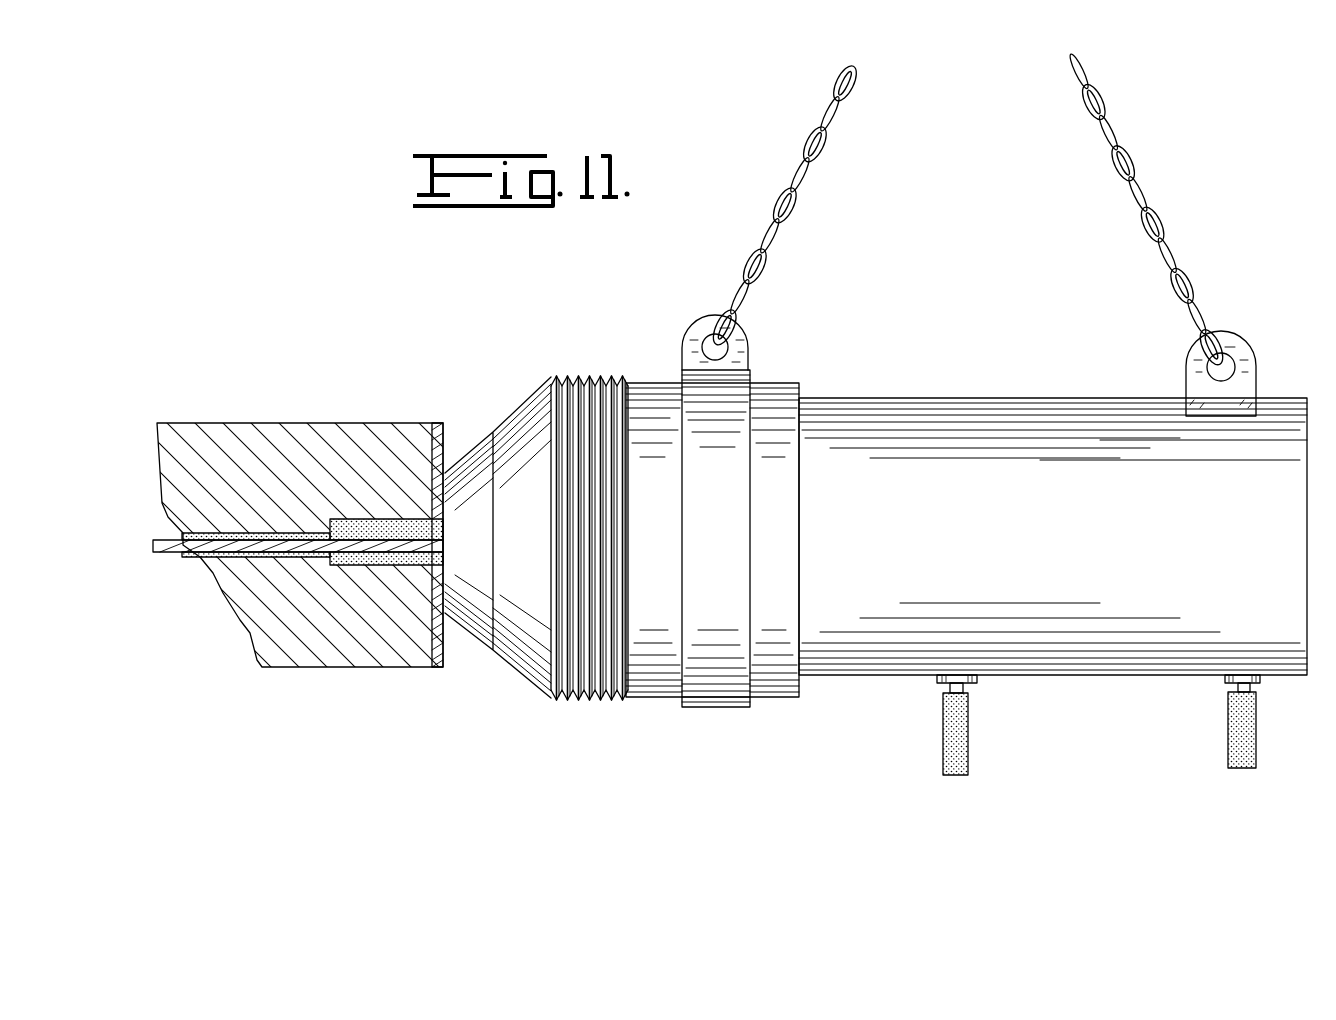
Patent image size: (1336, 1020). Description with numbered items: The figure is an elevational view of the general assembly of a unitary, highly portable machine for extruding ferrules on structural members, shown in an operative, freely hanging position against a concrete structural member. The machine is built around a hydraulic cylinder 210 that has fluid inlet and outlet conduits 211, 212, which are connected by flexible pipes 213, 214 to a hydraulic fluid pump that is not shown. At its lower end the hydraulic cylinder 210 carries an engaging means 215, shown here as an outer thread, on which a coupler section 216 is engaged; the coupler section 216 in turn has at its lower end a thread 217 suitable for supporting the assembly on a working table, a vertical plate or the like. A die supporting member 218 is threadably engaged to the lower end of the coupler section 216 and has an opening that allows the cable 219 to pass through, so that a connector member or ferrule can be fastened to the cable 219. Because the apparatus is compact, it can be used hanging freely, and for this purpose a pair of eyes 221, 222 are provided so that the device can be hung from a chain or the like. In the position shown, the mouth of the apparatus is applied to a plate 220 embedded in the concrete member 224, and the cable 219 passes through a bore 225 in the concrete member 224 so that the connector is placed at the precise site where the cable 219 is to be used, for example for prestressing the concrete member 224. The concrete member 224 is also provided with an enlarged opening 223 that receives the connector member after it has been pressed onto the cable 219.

The hydraulic cylinder 210 is at (977, 396).
The fluid inlet and outlet conduit 211 is at (1240, 692).
The fluid inlet and outlet conduit 212 is at (950, 690).
The flexible pipe 213 is at (1230, 715).
The flexible pipe 214 is at (945, 712).
The engaging means 215 is at (801, 396).
The coupler section 216 is at (783, 701).
The thread 217 is at (586, 378).
The die supporting member 218 is at (487, 638).
The cable 219 is at (180, 542).
The plate 220 is at (446, 440).
The eye 221 is at (1232, 343).
The eye 222 is at (698, 332).
The enlarged opening 223 is at (450, 550).
The concrete member 224 is at (328, 422).
The bore 225 is at (216, 558).